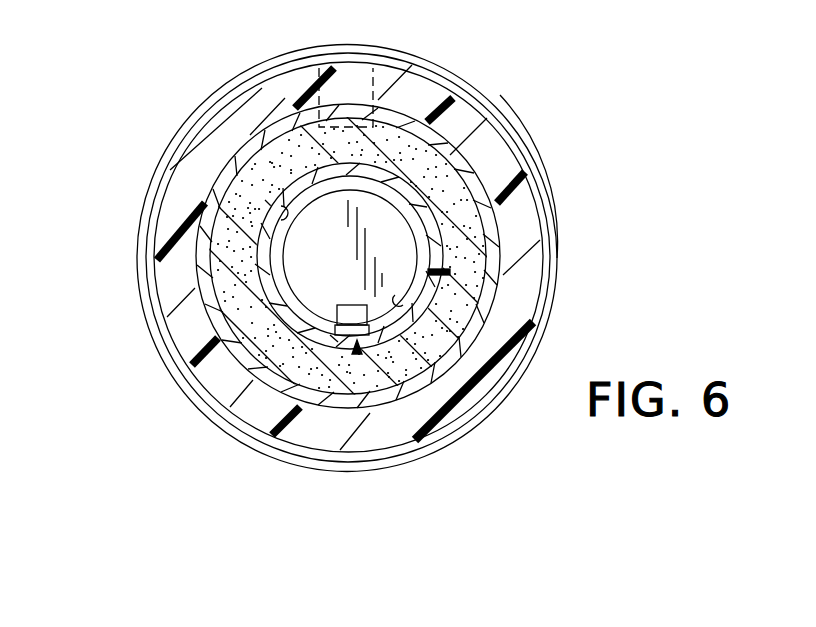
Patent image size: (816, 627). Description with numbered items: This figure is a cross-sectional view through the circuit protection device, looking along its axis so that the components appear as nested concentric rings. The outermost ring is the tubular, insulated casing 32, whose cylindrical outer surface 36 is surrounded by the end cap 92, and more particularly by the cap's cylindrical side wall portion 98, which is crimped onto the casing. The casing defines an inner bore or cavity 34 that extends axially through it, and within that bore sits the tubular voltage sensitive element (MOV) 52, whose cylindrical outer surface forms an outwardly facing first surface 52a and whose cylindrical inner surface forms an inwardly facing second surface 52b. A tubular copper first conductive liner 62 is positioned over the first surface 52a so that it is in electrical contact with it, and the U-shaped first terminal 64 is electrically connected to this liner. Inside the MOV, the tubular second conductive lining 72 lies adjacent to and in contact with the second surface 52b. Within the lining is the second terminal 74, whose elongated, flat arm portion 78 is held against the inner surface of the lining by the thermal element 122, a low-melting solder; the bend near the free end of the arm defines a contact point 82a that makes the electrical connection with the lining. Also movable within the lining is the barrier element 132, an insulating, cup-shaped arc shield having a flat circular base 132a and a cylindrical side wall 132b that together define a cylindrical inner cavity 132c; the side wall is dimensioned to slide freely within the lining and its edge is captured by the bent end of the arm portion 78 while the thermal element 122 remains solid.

The casing 32 is at (513, 140).
The inner bore or cavity 34 is at (258, 142).
The outer surface 36 is at (272, 80).
The voltage sensitive element (MOV) 52 is at (235, 355).
The first surface 52a is at (230, 186).
The second surface 52b is at (282, 222).
The first conductive liner 62 is at (189, 262).
The first terminal 64 is at (375, 81).
The second conductive lining 72 is at (438, 242).
The second terminal 74 is at (357, 352).
The arm portion 78 is at (347, 305).
The contact point 82a is at (348, 337).
The end cap 92 is at (487, 89).
The side wall portion 98 is at (541, 180).
The thermal element 122 is at (336, 340).
The barrier element 132 is at (445, 272).
The flat circular base 132a is at (405, 280).
The cylindrical side wall 132b is at (497, 204).
The cylindrical inner cavity 132c is at (450, 378).